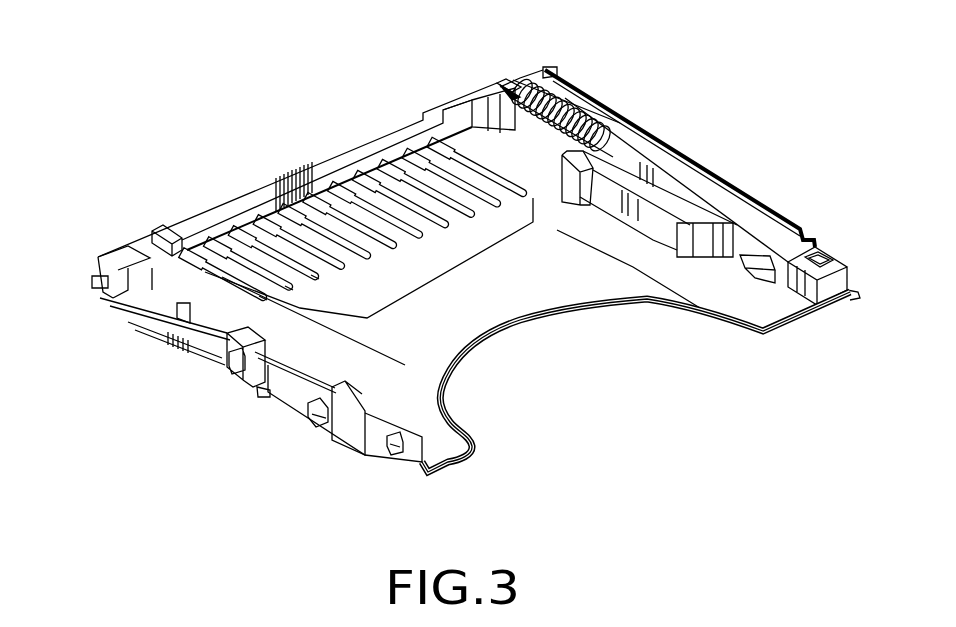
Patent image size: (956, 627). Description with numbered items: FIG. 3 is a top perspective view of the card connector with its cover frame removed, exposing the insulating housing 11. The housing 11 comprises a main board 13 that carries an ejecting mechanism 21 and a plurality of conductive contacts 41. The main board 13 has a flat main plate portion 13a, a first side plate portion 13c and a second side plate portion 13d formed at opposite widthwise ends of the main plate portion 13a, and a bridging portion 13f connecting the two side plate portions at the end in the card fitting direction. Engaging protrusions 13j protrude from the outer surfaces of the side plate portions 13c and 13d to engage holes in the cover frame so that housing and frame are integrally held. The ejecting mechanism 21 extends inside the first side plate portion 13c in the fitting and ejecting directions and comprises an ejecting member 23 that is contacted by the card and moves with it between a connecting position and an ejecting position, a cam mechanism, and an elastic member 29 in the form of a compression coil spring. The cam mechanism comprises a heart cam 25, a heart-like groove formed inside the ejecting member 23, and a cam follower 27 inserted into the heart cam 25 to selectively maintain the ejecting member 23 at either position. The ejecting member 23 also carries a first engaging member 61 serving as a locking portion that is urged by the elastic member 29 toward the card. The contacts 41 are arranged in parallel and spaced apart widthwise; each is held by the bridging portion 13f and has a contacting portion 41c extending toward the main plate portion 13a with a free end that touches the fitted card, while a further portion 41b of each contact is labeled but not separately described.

The insulating housing 11 is at (150, 188).
The main board 13 is at (587, 310).
The main plate portion 13a is at (533, 303).
The first side plate portion 13c is at (580, 90).
The second side plate portion 13d is at (345, 433).
The bridging portion 13f is at (308, 178).
The engaging protrusions 13j is at (230, 372).
The ejecting mechanism 21 is at (680, 195).
The ejecting member 23 is at (750, 205).
The heart cam 25 is at (690, 162).
The cam follower 27 is at (500, 82).
The elastic member 29 is at (600, 110).
The conductive contacts 41 is at (222, 233).
The terminal base portion 41b is at (348, 167).
The contacting portion 41c is at (467, 217).
The first engaging member 61 is at (747, 275).